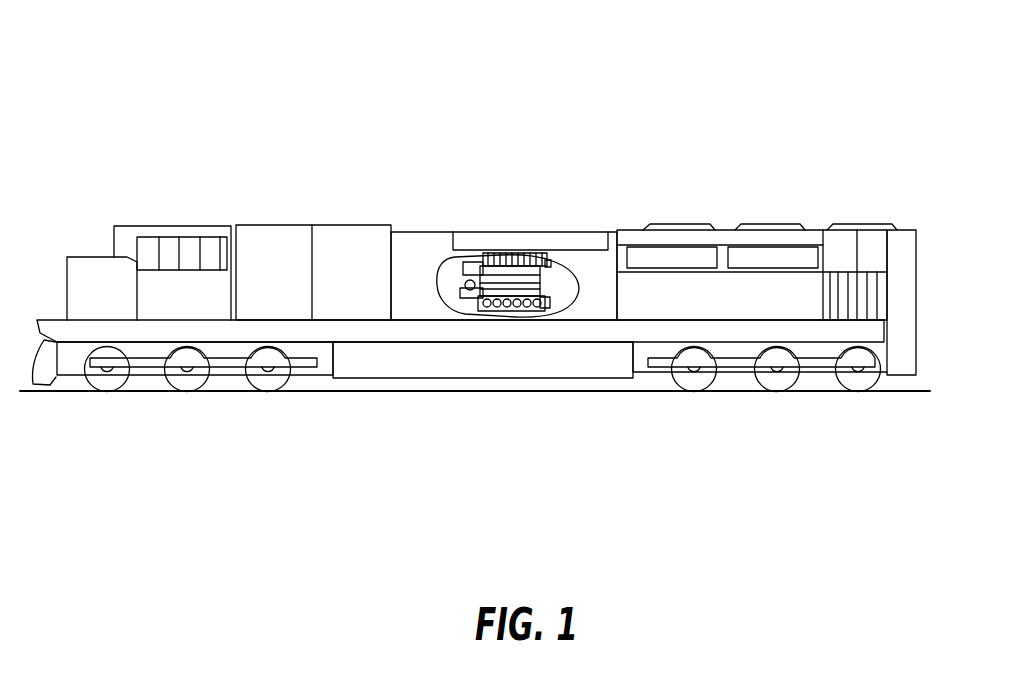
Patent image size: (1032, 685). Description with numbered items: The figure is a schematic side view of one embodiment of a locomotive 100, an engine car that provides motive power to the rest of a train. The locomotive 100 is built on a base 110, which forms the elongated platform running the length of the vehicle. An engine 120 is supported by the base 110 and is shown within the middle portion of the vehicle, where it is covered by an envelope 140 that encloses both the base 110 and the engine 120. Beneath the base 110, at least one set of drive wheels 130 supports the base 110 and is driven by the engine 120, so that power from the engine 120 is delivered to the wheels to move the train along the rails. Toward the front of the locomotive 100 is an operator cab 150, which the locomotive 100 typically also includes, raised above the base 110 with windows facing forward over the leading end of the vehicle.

The locomotive 100 is at (523, 67).
The base 110 is at (36, 318).
The engine 120 is at (538, 268).
The set of drive wheels 130 is at (697, 388).
The envelope 140 is at (420, 232).
The operator cab 150 is at (172, 226).